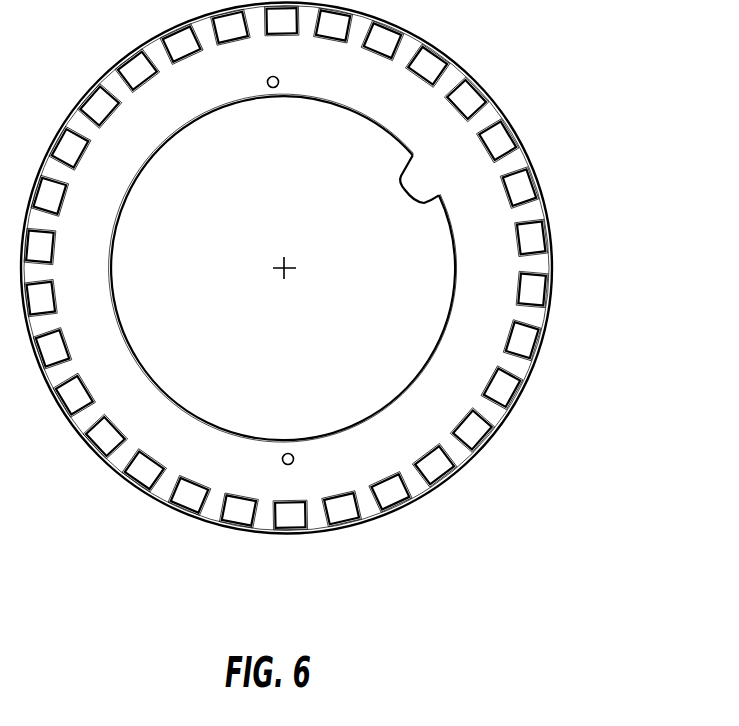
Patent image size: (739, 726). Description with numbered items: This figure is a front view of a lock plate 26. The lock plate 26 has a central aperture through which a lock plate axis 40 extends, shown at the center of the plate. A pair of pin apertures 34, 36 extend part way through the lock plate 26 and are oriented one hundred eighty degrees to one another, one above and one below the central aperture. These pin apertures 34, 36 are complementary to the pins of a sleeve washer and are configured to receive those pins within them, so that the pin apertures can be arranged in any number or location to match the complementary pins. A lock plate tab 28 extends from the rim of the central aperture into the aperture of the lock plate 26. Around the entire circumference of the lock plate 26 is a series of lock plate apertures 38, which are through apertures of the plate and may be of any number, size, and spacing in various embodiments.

The lock plate 26 is at (540, 46).
The lock plate tab 28 is at (416, 172).
The pin aperture 34 is at (272, 88).
The pin aperture 36 is at (285, 453).
The lock plate apertures 38 is at (538, 296).
The lock plate axis 40 is at (280, 265).